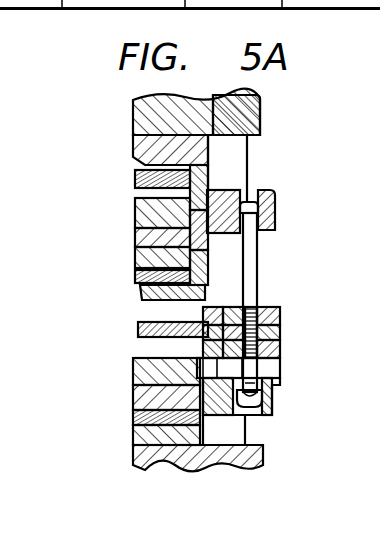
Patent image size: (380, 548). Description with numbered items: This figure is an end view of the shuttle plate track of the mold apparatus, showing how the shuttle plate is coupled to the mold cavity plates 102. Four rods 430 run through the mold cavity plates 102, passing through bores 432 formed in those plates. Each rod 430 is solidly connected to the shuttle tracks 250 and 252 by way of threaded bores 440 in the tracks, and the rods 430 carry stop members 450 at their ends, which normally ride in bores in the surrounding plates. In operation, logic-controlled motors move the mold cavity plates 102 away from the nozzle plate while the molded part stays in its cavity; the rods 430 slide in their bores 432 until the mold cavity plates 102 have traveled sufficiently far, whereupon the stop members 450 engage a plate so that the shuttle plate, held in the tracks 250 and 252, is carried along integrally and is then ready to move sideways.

The mold cavity plates 102 is at (128, 402).
The shuttle track 250 is at (281, 358).
The shuttle track 252 is at (280, 311).
The rods 430 is at (258, 243).
The bores 432 is at (260, 405).
The threaded bores 440 is at (281, 343).
The stop members 450 is at (265, 190).